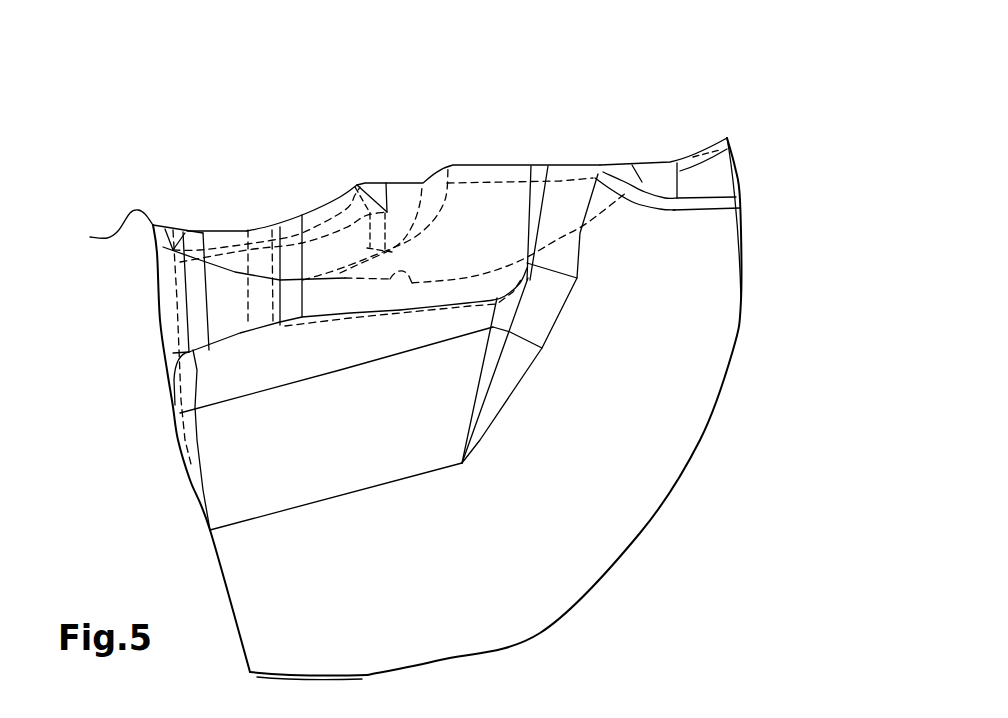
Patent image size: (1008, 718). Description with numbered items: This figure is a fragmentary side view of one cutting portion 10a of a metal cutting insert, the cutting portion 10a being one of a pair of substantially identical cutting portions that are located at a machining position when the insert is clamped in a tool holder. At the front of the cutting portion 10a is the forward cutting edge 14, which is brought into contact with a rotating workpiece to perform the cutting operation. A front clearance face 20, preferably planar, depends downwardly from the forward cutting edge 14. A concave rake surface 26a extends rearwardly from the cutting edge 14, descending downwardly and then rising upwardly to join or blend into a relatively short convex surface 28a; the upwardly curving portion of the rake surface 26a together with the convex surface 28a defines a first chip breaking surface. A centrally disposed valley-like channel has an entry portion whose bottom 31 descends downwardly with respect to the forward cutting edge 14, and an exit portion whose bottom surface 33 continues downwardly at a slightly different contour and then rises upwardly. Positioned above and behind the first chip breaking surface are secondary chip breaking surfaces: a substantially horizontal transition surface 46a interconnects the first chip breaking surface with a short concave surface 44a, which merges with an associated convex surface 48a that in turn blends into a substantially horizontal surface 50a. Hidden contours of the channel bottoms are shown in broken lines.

The cutting portion 10a is at (534, 529).
The forward cutting edge 14 is at (103, 231).
The front clearance face 20 is at (170, 312).
The concave rake surface 26a is at (226, 232).
The bottom 31 is at (230, 272).
The convex surface 28a is at (358, 185).
The transition surface 46a is at (390, 183).
The concave surface 44a is at (411, 183).
The convex surface 48a is at (428, 176).
The substantially horizontal surface 50a is at (453, 165).
The bottom surface 33 is at (412, 283).